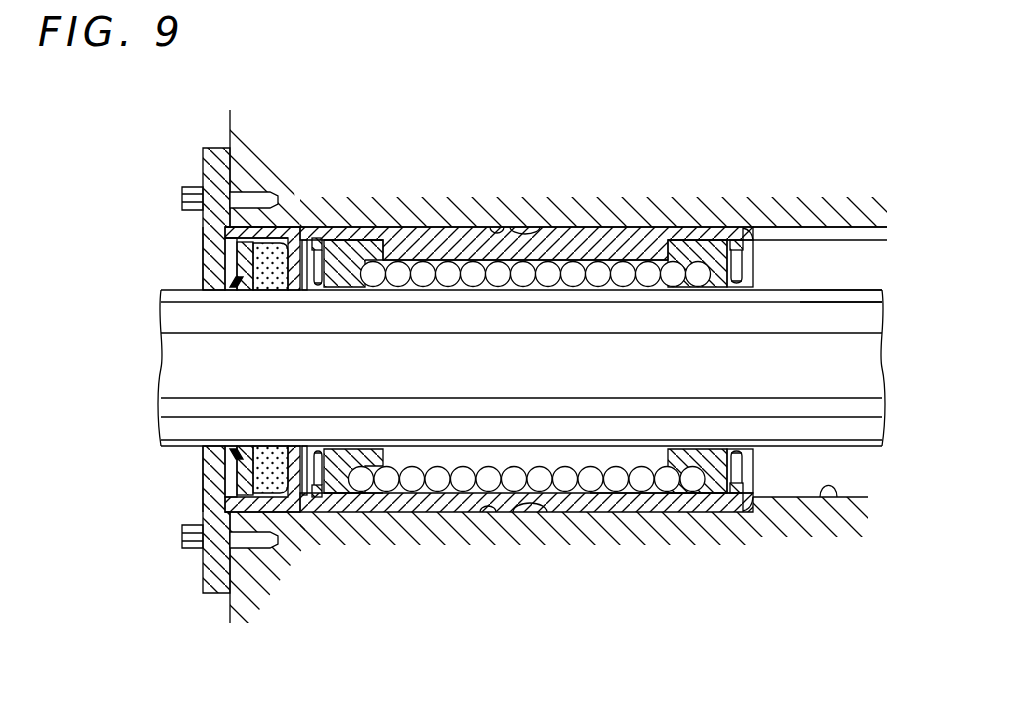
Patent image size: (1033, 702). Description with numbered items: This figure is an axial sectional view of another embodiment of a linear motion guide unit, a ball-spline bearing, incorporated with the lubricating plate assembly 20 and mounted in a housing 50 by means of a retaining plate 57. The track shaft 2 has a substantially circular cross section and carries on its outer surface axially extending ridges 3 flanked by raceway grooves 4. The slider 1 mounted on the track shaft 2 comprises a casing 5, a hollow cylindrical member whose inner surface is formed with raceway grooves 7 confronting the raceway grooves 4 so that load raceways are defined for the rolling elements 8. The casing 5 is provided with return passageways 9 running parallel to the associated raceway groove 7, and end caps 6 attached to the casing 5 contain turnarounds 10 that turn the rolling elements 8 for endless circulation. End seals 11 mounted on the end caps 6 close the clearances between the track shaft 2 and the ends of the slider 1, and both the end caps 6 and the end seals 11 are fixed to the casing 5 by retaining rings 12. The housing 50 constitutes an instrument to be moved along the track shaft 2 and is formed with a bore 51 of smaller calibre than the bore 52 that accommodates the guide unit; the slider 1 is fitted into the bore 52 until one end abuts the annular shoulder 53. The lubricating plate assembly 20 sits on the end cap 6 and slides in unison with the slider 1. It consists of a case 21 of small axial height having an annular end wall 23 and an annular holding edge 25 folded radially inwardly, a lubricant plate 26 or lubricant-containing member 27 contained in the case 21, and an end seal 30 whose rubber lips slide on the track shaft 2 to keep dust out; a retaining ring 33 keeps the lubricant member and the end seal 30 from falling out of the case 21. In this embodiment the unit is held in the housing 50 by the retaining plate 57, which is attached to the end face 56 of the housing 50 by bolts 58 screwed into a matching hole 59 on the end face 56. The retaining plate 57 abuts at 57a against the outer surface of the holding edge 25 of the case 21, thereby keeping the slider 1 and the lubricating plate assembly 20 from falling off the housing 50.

The slider 1 is at (567, 220).
The track shaft 2 is at (850, 368).
The ridges 3 is at (860, 293).
The raceway grooves 4 is at (877, 304).
The casing 5 is at (613, 245).
The end caps 6 is at (340, 255).
The raceway grooves 7 is at (437, 262).
The rolling elements 8 is at (477, 270).
The return passageways 9 is at (622, 497).
The turnarounds 10 is at (360, 256).
The end seals 11 is at (318, 283).
The retaining rings 12 is at (318, 238).
The lubricating plate assembly 20 is at (272, 219).
The case 21 is at (282, 236).
The annular end wall 23 is at (304, 272).
The annular holding edge 25 is at (238, 265).
The lubricant plate 26 is at (261, 288).
The lubricant-containing member 27 is at (268, 447).
The end seal 30 is at (228, 279).
The retaining ring 33 is at (262, 520).
The housing 50 is at (817, 230).
The bore 51 is at (838, 503).
The bore 52 is at (497, 230).
The annular shoulder 53 is at (755, 228).
The end face 56 is at (230, 112).
The retaining plate 57 is at (206, 160).
The abutting portion 57a is at (205, 240).
The bolts 58 is at (184, 190).
The matching hole 59 is at (256, 193).